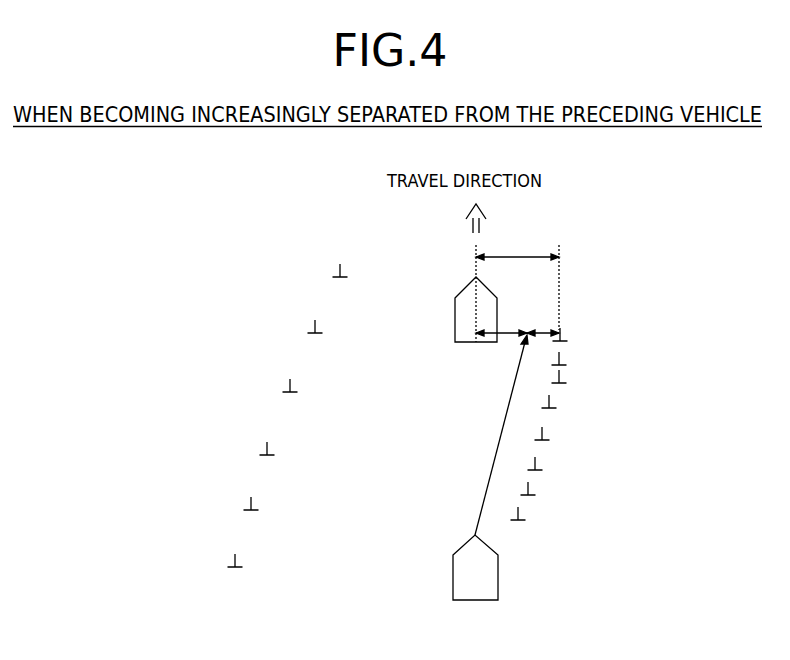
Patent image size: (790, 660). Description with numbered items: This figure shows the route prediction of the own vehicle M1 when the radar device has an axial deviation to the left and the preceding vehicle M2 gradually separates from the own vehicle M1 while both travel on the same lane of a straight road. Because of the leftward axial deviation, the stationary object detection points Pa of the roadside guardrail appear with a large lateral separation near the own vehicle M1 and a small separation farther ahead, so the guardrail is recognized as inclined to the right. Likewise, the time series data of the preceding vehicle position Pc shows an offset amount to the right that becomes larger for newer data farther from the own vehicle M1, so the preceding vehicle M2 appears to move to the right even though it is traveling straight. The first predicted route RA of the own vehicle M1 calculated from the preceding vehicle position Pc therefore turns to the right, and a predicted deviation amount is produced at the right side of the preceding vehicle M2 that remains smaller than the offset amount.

The own vehicle M1 is at (470, 600).
The preceding vehicle M2 is at (461, 292).
The stationary object detection point Pa is at (247, 505).
The preceding vehicle position (vehicle detection point) Pc is at (531, 488).
The first predicted route RA is at (496, 453).